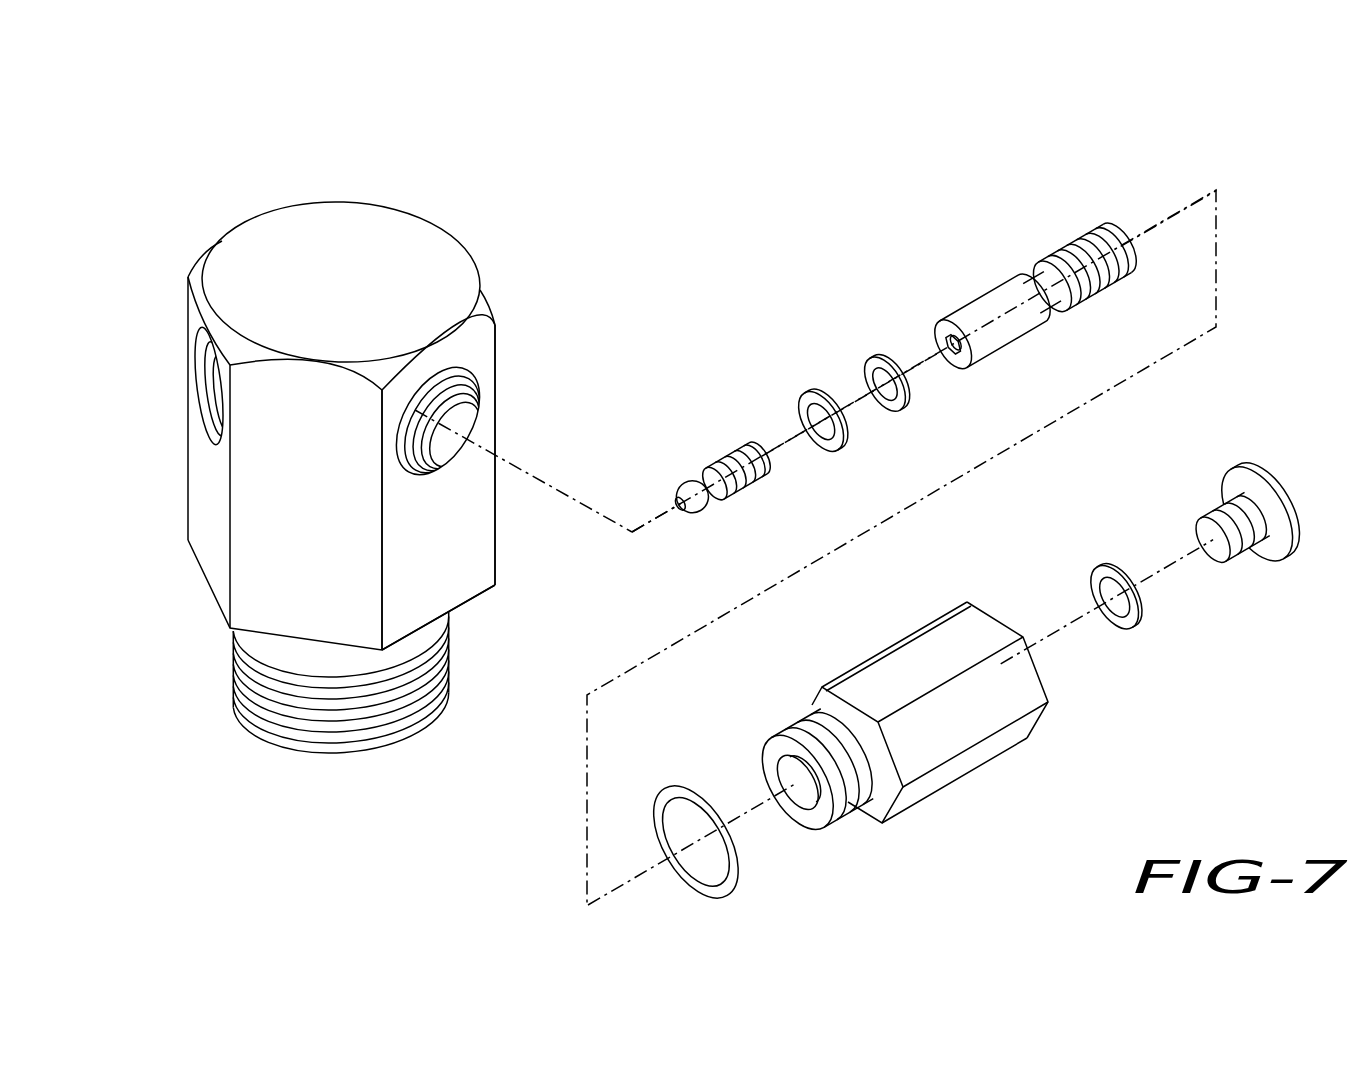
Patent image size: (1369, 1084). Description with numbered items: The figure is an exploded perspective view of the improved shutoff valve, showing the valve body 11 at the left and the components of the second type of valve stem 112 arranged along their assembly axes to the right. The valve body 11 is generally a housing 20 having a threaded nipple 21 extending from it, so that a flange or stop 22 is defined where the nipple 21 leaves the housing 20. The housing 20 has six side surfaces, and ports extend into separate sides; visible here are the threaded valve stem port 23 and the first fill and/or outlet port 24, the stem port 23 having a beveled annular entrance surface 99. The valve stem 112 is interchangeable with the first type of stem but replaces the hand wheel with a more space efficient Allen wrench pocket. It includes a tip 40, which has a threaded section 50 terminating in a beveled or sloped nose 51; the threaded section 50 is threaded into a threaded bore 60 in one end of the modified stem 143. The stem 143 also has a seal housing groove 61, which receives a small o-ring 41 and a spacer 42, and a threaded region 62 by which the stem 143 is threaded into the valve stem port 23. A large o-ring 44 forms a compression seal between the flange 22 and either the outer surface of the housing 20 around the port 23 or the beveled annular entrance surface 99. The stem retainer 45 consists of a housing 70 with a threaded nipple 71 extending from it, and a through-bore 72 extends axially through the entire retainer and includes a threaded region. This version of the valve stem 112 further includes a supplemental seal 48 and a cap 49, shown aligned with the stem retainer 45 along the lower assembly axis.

The valve body 11 is at (214, 582).
The housing 20 is at (408, 237).
The threaded nipple 21 is at (437, 703).
The flange 22 is at (478, 601).
The valve stem port 23 is at (466, 415).
The first fill and/or outlet port 24 is at (211, 388).
The beveled annular entrance surface 99 is at (438, 458).
The valve stem 112 is at (826, 250).
The tip 40 is at (714, 453).
The threaded section 50 is at (738, 492).
The beveled nose 51 is at (702, 503).
The small o-ring 41 is at (806, 393).
The spacer 42 is at (878, 357).
The stem 143 is at (1055, 247).
The threaded bore 60 is at (950, 363).
The seal housing groove 61 is at (1043, 317).
The threaded region 62 is at (1110, 285).
The stem retainer 45 is at (906, 630).
The large o-ring 44 is at (672, 793).
The housing 70 is at (982, 758).
The threaded nipple 71 is at (835, 828).
The through-bore 72 is at (792, 773).
The supplemental seal 48 is at (1131, 625).
The cap 49 is at (1277, 478).